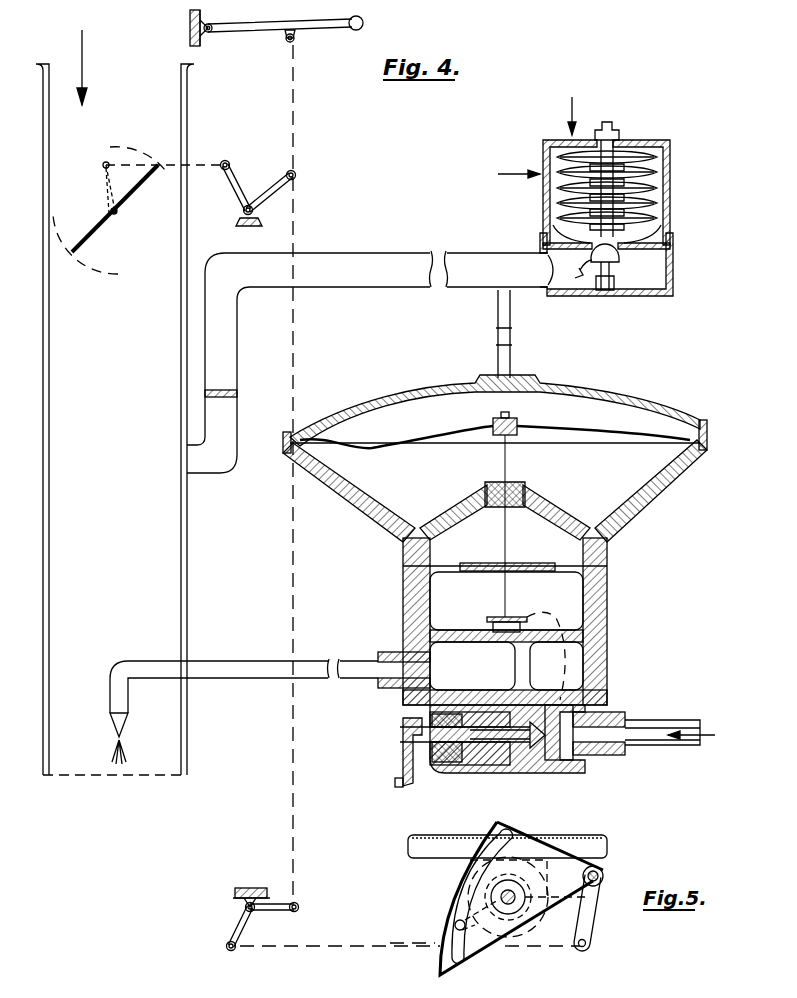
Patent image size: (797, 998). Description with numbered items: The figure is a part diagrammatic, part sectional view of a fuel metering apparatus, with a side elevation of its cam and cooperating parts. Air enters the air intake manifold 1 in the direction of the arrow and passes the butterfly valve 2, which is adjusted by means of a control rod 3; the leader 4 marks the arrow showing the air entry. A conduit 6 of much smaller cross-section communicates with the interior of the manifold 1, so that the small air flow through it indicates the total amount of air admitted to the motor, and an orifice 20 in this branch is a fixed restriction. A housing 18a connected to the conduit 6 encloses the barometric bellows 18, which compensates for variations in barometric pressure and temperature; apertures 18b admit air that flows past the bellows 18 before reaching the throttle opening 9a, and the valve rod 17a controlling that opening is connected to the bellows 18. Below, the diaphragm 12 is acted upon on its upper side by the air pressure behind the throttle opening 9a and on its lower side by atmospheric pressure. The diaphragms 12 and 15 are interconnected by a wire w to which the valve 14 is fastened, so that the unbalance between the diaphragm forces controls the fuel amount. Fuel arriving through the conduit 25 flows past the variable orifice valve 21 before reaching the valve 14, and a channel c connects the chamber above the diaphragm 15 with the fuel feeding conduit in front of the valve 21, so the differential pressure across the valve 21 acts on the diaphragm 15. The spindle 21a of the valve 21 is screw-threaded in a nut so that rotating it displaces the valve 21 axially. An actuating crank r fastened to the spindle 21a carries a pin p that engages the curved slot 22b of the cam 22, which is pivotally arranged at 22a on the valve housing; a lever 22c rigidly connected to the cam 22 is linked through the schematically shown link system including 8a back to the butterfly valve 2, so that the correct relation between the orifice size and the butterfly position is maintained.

In FIG. 4, the air intake manifold 1 is at (110, 419).
In FIG. 4, the butterfly valve 2 is at (137, 210).
In FIG. 4, the control rod 3 is at (315, 480).
In FIG. 4, the air flow direction 4 is at (92, 67).
In FIG. 4, the conduit 6 is at (365, 258).
In FIG. 4, the link system 8a is at (285, 787).
In FIG. 4, the throttle opening 9a is at (624, 258).
In FIG. 4, the diaphragm 12 is at (577, 433).
In FIG. 4, the control needle valve 14 is at (506, 616).
In FIG. 4, the diaphragm 15 is at (505, 558).
In FIG. 4, the valve rod 17a is at (597, 258).
In FIG. 4, the barometric bellows 18 is at (662, 201).
In FIG. 4, the housing 18a is at (657, 148).
In FIG. 4, the apertures 18b is at (511, 175).
In FIG. 4, the orifice 20 is at (231, 387).
In FIG. 4, the variable orifice valve 21 is at (540, 745).
In FIG. 4, the spindle 21a is at (437, 765).
In FIG. 5, the cam 22 is at (523, 845).
In FIG. 5, the pivot 22a is at (604, 874).
In FIG. 5, the curved slot 22b is at (468, 862).
In FIG. 5, the lever 22c is at (597, 937).
In FIG. 4, the conduit 25 is at (270, 708).
In FIG. 4, the channel c is at (590, 622).
In FIG. 4, the pin p is at (397, 786).
In FIG. 5, the pin p is at (455, 923).
In FIG. 4, the actuating crank r is at (405, 758).
In FIG. 4, the wire w is at (509, 469).